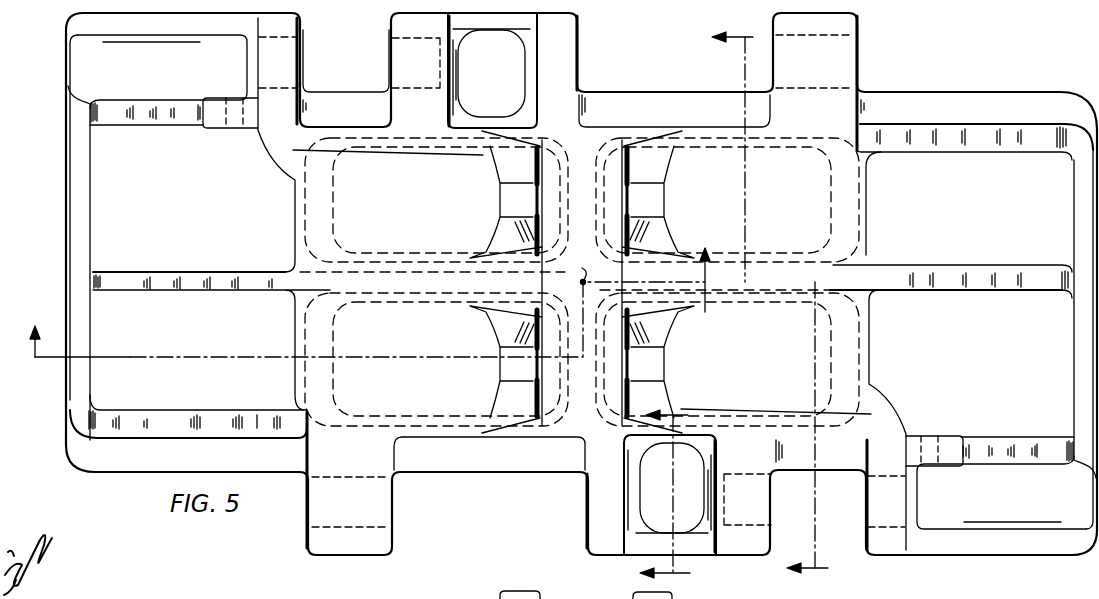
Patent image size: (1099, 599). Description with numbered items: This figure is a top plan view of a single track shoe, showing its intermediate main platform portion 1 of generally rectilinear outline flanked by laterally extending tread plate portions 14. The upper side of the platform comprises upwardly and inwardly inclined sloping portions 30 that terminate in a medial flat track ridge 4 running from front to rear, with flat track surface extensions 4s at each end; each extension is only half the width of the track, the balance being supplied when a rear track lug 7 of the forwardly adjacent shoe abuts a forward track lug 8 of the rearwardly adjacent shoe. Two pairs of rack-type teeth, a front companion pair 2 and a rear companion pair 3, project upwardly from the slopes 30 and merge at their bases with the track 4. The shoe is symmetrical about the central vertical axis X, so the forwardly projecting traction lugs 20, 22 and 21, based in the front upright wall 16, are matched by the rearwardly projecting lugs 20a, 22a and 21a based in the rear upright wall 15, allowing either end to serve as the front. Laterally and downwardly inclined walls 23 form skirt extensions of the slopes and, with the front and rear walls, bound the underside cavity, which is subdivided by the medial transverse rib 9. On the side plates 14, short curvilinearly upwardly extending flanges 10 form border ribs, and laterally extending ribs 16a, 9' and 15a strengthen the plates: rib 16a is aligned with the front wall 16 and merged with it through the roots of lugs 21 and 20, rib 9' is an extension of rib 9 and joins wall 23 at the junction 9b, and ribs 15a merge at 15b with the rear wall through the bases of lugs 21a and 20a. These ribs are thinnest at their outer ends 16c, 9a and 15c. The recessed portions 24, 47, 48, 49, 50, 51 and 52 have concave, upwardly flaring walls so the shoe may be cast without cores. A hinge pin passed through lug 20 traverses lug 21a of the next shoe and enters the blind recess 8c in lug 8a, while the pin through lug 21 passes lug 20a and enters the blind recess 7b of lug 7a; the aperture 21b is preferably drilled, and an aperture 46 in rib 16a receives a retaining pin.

The intermediate main platform portion 1 is at (458, 230).
The front companion pair of rack-type teeth 2 is at (522, 190).
The rear companion pair of rack-type teeth 3 is at (522, 348).
The medial flat track ridge 4 is at (577, 217).
The flat track surface extensions 4s is at (562, 100).
The rear track lug 7 is at (590, 540).
The lug 7a is at (744, 557).
The blind recess 7b is at (753, 480).
The forward track lug 8 is at (574, 48).
The lug 8a is at (396, 27).
The blind recess 8c is at (410, 40).
The medial transverse rib 9 is at (368, 321).
The rib portion 9' is at (581, 264).
The outer end of rib portion 9' 9a is at (97, 272).
The junction 9b is at (296, 270).
The flanges 10 is at (70, 233).
The tread plate portions 14 is at (65, 168).
The rear upright wall 15 is at (502, 460).
The ribs 15a is at (190, 422).
The inner end merging junction of ribs 15a 15b is at (283, 422).
The outer end of rib 15a 15c is at (100, 422).
The front upright wall 16 is at (344, 113).
The rib portion 16a is at (140, 122).
The outer end of rib portion 16a 16c is at (101, 120).
The forwardly projecting traction lug 20 is at (286, 24).
The rearwardly projecting lug 20a is at (889, 556).
The forwardly projecting traction lug 21 is at (862, 27).
The rearwardly projecting lug 21a is at (352, 556).
The hinge pin receiving aperture 21b is at (858, 47).
The forwardly projecting traction lug 22 is at (580, 68).
The rearwardly projecting lug 22a is at (632, 557).
The laterally and downwardly inclined walls 23 is at (297, 216).
The recessed portion 24 is at (582, 284).
The sloping portions 30 is at (412, 237).
The aperture 46 is at (235, 108).
The recessed portion 47 is at (162, 71).
The recessed portion 48 is at (194, 145).
The recessed portion 49 is at (210, 350).
The recessed portion 50 is at (1001, 492).
The recessed portion 51 is at (951, 420).
The recessed portion 52 is at (952, 212).